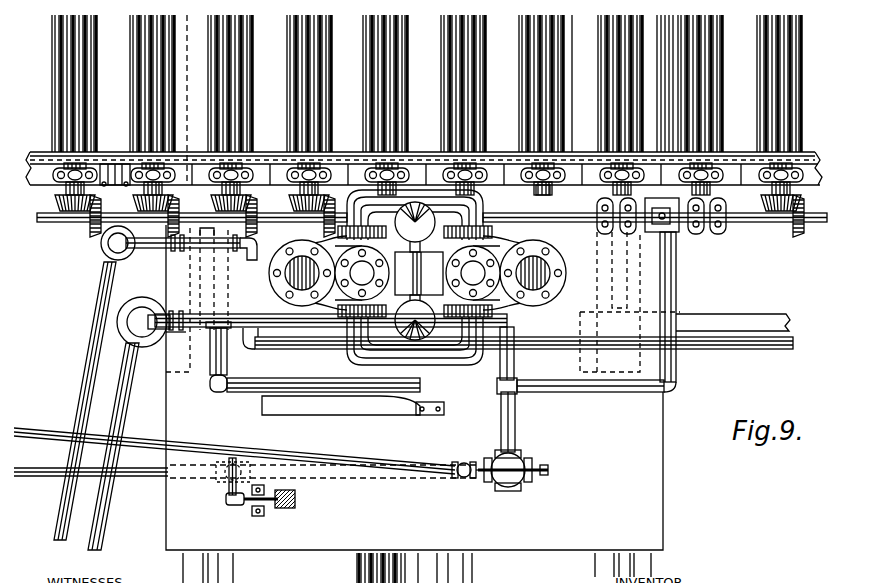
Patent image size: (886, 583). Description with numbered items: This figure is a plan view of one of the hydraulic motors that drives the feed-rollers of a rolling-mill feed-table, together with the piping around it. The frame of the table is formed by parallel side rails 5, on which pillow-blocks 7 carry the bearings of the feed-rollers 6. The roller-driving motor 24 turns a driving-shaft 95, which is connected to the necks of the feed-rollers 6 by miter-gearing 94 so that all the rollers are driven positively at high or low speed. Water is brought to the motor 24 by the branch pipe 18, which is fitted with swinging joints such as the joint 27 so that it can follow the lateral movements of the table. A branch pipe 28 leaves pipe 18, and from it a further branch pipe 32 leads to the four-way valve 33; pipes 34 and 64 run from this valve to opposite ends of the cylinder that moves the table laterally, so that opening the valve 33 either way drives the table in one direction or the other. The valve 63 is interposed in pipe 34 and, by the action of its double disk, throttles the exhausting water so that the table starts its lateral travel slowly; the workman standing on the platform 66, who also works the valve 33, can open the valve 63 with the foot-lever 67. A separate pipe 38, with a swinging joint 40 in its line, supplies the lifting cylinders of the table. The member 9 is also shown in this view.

The feed-rollers 6 is at (427, 100).
The side rails 5 is at (421, 207).
The pillow-blocks 7 is at (58, 195).
The miter-gearing 94 is at (115, 186).
The driving-shaft 95 is at (225, 212).
The swinging joint 40 is at (100, 250).
The swinging joint 27 is at (142, 300).
The branch pipe 28 is at (688, 270).
The branch pipe 38 is at (84, 371).
The branch pipe 18 is at (104, 528).
The pipe 64 is at (35, 430).
The pipe 34 is at (30, 478).
The valve 63 is at (226, 490).
The foot-lever 67 is at (287, 512).
The platform 66 is at (414, 387).
The four-way valve 33 is at (508, 492).
The branch pipe 32 is at (517, 432).
The roller-driving motor 24 is at (417, 277).
The frame 9 is at (612, 257).